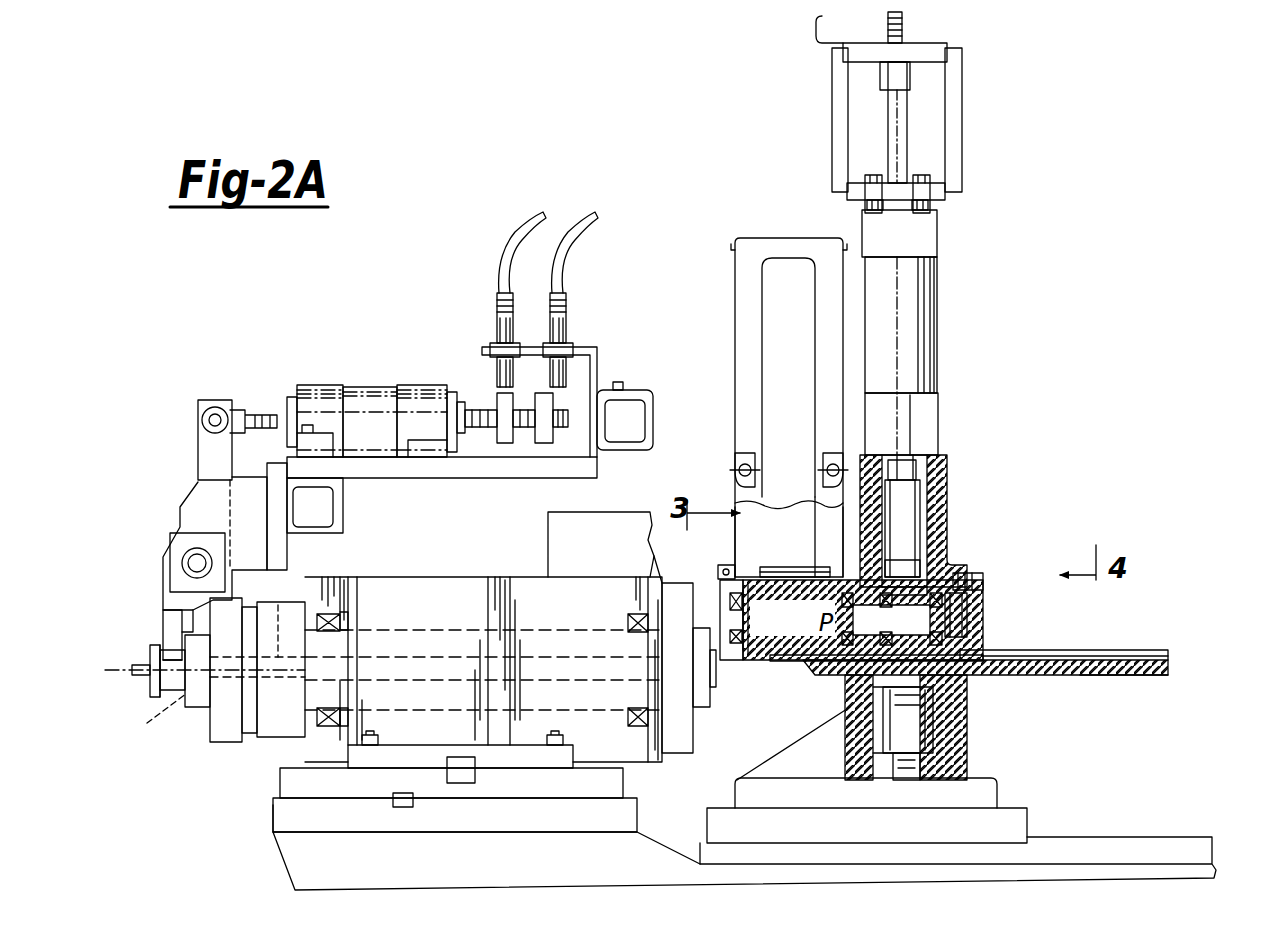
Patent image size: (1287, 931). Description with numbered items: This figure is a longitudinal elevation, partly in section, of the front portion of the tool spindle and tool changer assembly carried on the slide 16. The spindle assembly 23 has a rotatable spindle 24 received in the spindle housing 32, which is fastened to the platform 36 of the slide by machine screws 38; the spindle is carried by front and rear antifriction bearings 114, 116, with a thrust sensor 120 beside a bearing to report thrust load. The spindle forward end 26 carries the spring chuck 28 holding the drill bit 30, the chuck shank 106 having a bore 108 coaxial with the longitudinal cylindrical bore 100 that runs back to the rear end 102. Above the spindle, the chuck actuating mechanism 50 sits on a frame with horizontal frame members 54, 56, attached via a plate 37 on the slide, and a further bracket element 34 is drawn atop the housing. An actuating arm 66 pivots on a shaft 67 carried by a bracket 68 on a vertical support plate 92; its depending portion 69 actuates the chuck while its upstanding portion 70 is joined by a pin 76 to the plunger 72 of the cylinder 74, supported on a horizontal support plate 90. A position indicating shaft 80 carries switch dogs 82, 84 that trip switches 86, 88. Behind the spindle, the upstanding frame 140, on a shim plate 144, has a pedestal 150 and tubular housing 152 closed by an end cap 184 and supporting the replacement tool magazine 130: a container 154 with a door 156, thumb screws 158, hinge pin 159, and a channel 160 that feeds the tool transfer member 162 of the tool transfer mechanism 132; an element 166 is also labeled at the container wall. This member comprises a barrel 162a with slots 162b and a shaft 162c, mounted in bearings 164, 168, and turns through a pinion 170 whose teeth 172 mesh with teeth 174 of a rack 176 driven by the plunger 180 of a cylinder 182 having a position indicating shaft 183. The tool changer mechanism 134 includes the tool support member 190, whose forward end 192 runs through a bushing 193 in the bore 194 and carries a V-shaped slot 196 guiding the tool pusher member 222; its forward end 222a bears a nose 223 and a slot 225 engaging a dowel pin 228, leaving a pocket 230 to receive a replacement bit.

The slide 16 is at (1214, 874).
The spindle assembly 23 is at (140, 635).
The spindle 24 is at (265, 740).
The forward end 26 is at (178, 738).
The chuck 28 is at (135, 696).
The drill bit 30 is at (118, 672).
The spindle housing 32 is at (418, 577).
The mounting bracket 34 is at (548, 537).
The platform 36 is at (262, 805).
The plate 37 is at (283, 820).
The machine screws 38 is at (378, 742).
The chuck actuating mechanism 50 is at (178, 468).
The horizontal frame member 54 is at (342, 506).
The horizontal frame member 56 is at (653, 425).
The actuating arm 66 is at (180, 575).
The shaft 67 is at (183, 550).
The bracket 68 is at (178, 497).
The depending portion 69 is at (168, 620).
The upstanding portion 70 is at (200, 440).
The plunger 72 is at (270, 412).
The cylinder 74 is at (316, 405).
The pin 76 is at (216, 408).
The position indicating shaft 80 is at (487, 412).
The switch dog 82 is at (505, 445).
The switch dog 84 is at (546, 445).
The switch 86 is at (503, 330).
The switch 88 is at (568, 335).
The horizontal support plate 90 is at (408, 478).
The vertical support plate 92 is at (286, 558).
The longitudinal cylindrical bore 100 is at (232, 606).
The rear end 102 is at (703, 735).
The shank 106 is at (205, 725).
The bore 108 is at (143, 722).
The front antifriction bearing 114 is at (345, 610).
The rear antifriction bearing 116 is at (630, 625).
The thrust sensor 120 is at (342, 624).
The replacement tool magazine 130 is at (720, 270).
The tool transfer mechanism 132 is at (995, 593).
The tool changer mechanism 134 is at (1168, 648).
The upstanding frame 140 is at (1020, 772).
The shim plate 144 is at (1027, 830).
The pedestal 150 is at (955, 725).
The tubular housing 152 is at (750, 660).
The container 154 is at (735, 400).
The door 156 is at (735, 444).
The thumb screws 158 is at (730, 478).
The hinge pin 159 is at (735, 245).
The channel 160 is at (756, 533).
The tool transfer member 162 is at (778, 650).
The barrel 162a is at (722, 620).
The slot 162b is at (840, 618).
The shaft 162c is at (985, 604).
The antifriction bearings 164 is at (722, 566).
The slot 166 is at (815, 500).
The bearings 168 is at (875, 500).
The pinion 170 is at (925, 592).
The teeth 172 is at (905, 562).
The teeth 174 is at (910, 520).
The rack 176 is at (908, 488).
The plunger 180 is at (905, 470).
The cylinder 182 is at (932, 327).
The position indicating shaft 183 is at (915, 134).
The end cap 184 is at (720, 592).
The tool support member 190 is at (1142, 650).
The forward end 192 is at (806, 663).
The bushing 193 is at (960, 688).
The longitudinal bore 194 is at (965, 712).
The V-shaped slot 196 is at (848, 705).
The tool pusher member 222 is at (1100, 662).
The forward end 222a is at (867, 825).
The nose 223 is at (920, 760).
The longitudinal slot 225 is at (1088, 676).
The dowel pin 228 is at (1008, 672).
The pocket 230 is at (866, 793).